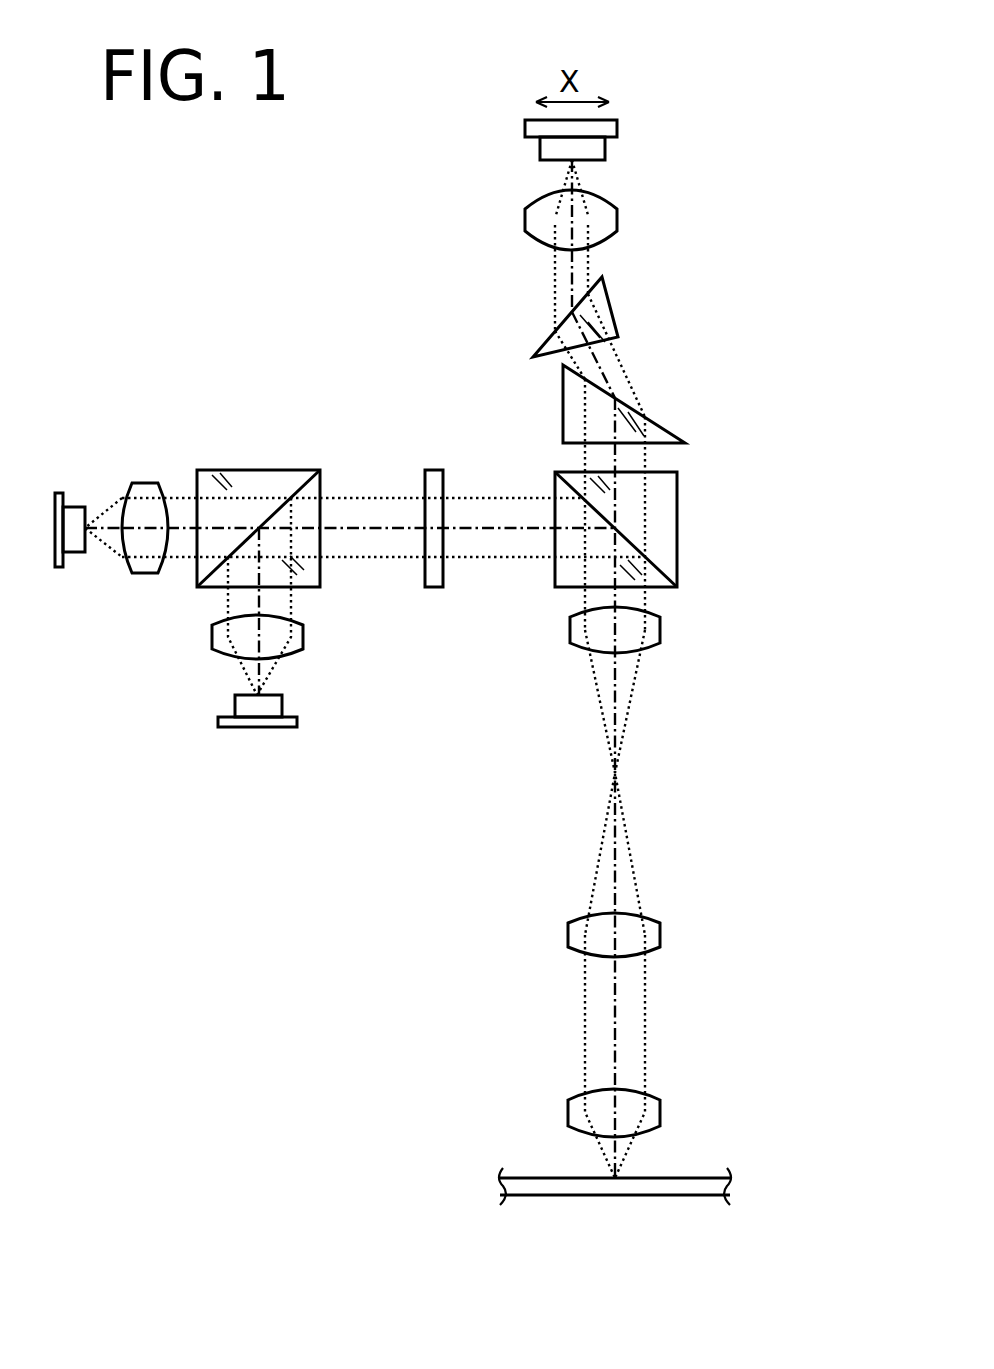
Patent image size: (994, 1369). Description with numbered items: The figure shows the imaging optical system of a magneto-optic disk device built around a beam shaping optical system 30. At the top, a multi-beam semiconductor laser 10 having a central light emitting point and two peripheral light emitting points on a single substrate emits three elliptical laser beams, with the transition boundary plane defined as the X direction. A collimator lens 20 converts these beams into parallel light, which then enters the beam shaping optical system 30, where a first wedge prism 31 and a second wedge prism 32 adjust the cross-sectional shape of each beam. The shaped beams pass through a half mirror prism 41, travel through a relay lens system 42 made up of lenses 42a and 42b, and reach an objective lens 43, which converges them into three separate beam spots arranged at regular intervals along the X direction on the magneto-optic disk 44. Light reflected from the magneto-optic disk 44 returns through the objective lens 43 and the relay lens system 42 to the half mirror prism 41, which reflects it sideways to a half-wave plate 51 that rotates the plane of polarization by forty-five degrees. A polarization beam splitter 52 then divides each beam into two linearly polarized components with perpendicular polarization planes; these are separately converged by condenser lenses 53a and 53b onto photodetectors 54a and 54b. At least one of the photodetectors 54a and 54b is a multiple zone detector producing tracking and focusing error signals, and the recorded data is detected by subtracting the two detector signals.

The multi-beam semiconductor laser 10 is at (605, 148).
The collimator lens 20 is at (617, 220).
The beam shaping optical system 30 is at (655, 354).
The first wedge prism 31 is at (617, 318).
The second wedge prism 32 is at (640, 404).
The half mirror prism 41 is at (677, 528).
The relay lens system 42 is at (703, 778).
The lens 42a is at (660, 630).
The lens 42b is at (655, 927).
The objective lens 43 is at (660, 1113).
The magneto-optic disk 44 is at (528, 1178).
The half-wave plate 51 is at (430, 590).
The polarization beam splitter 52 is at (283, 445).
The condenser lens 53a is at (140, 573).
The condenser lens 53b is at (303, 640).
The photodetector 54a is at (72, 508).
The photodetector 54b is at (235, 707).